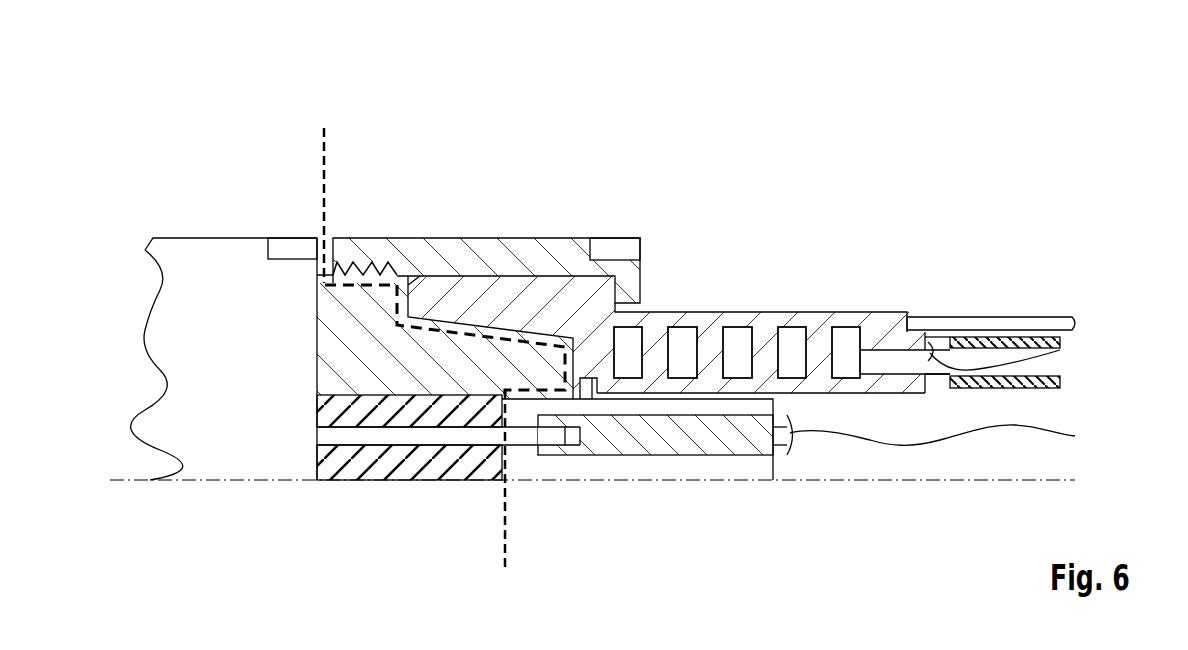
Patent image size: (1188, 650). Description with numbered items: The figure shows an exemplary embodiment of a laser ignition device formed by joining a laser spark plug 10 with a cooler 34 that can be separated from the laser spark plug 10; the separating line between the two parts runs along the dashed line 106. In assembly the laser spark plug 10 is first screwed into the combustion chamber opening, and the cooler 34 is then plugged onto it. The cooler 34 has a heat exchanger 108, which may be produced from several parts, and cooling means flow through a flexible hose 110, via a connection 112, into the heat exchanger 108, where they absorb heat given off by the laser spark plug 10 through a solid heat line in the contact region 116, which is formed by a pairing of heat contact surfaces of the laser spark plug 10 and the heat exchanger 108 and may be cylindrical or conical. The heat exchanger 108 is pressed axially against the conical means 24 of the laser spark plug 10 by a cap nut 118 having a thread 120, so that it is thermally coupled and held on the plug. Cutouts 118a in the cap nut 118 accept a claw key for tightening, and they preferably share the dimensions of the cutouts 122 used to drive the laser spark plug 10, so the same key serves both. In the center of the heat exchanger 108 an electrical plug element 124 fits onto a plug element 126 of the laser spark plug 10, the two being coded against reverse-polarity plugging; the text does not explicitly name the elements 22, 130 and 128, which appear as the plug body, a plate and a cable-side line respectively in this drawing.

The laser spark plug 10 is at (149, 80).
The cooler 34 is at (689, 162).
The dashed line 106 is at (328, 142).
The cutouts 122 is at (290, 237).
The thread 120 is at (333, 289).
The means of the laser spark plug 24 is at (328, 333).
The housing 22 is at (302, 462).
The contact region 116 is at (477, 323).
The cap nut 118 is at (545, 249).
The cutouts 118a is at (612, 246).
The heat exchanger 108 is at (845, 338).
The cover plate 130 is at (997, 320).
The connection 112 is at (1062, 350).
The flexible hose 110 is at (1062, 386).
The plug element 126 is at (530, 438).
The electrical plug element 124 is at (613, 458).
The cable 128 is at (878, 441).